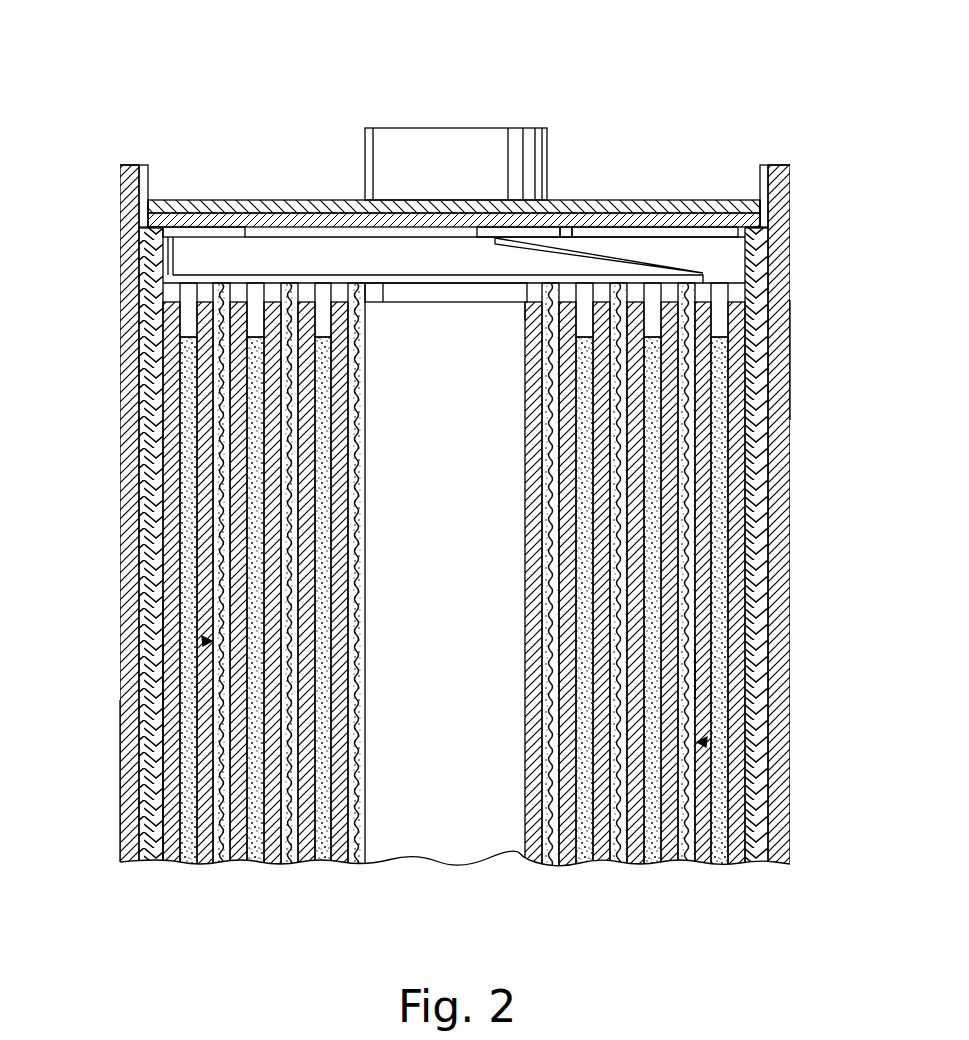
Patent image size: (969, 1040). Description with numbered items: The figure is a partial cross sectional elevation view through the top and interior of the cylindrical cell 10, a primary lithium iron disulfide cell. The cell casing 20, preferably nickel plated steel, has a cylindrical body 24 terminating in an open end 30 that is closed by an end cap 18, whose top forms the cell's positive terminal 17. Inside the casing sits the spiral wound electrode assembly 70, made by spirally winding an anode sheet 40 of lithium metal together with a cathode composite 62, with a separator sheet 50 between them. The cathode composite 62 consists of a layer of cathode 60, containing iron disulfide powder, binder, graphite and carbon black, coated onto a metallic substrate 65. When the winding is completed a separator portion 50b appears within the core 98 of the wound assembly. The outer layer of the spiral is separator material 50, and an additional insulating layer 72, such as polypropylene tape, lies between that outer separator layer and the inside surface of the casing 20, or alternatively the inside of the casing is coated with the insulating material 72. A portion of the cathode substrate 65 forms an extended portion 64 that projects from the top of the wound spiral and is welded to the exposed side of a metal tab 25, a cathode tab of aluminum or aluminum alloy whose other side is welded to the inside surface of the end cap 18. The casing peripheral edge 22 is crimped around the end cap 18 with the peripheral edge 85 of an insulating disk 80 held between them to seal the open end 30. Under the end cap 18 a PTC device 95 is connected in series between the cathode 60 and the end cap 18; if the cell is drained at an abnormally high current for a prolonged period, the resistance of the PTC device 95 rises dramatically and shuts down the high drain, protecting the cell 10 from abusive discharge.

The cylindrical cell 10 is at (792, 357).
The positive terminal 17 is at (452, 128).
The end cap 18 is at (262, 200).
The cell casing 20 is at (125, 268).
The casing peripheral edge 22 is at (120, 185).
The cylindrical body 24 is at (117, 763).
The metal tab 25 is at (688, 268).
The open end 30 is at (153, 195).
The anode sheet 40 is at (454, 579).
The separator sheet 50 is at (454, 588).
The separator portion 50b is at (467, 608).
The cathode 60 is at (454, 579).
The cathode composite 62 is at (204, 642).
The extended portion 64 is at (702, 295).
The metallic substrate 65 is at (702, 675).
The spiral wound electrode assembly 70 is at (153, 722).
The insulating layer 72 is at (147, 392).
The insulating disk 80 is at (765, 218).
The peripheral edge of insulating disk 85 is at (146, 167).
The PTC device 95 is at (597, 237).
The core 98 is at (458, 747).